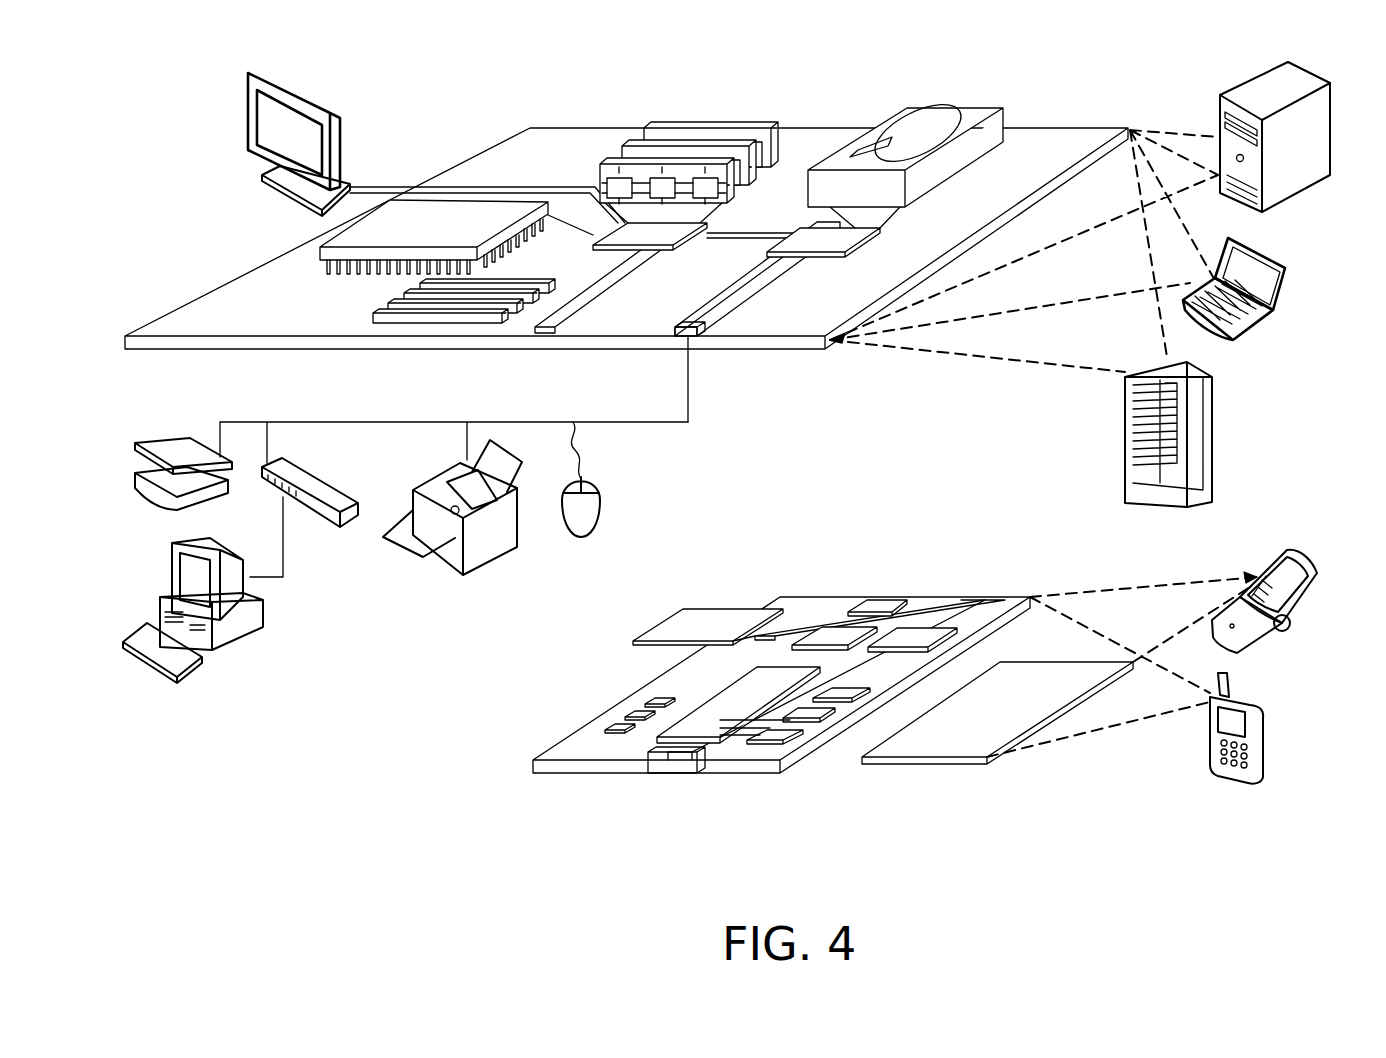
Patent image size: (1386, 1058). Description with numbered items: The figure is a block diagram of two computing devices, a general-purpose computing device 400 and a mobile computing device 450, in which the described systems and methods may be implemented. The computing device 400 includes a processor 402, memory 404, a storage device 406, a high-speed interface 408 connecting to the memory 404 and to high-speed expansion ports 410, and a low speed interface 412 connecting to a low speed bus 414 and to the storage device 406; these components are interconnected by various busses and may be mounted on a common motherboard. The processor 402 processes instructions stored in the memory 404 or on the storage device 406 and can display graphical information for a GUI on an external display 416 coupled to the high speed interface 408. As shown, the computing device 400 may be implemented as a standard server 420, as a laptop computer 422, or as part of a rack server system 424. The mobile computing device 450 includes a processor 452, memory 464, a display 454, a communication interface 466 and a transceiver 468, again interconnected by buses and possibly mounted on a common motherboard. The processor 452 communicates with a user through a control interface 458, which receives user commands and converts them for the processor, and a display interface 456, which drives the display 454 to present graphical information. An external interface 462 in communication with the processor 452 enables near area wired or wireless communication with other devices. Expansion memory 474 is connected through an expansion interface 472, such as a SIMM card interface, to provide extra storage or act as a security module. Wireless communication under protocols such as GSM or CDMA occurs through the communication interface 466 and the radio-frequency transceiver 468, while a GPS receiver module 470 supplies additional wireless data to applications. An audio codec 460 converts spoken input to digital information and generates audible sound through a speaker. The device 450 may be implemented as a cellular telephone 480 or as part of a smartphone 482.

The computing device 400 is at (452, 104).
The processor 402 is at (322, 251).
The memory 404 is at (652, 123).
The storage device 406 is at (897, 112).
The high-speed interface 408 is at (622, 233).
The high-speed expansion ports 410 is at (397, 307).
The low speed interface 412 is at (806, 237).
The low speed bus 414 is at (697, 337).
The display 416 is at (257, 74).
The standard server 420 is at (1220, 113).
The laptop computer 422 is at (1287, 270).
The rack server system 424 is at (1125, 467).
The computing device 450 is at (512, 773).
The processor 452 is at (713, 728).
The display 454 is at (953, 747).
The display interface 456 is at (778, 745).
The control interface 458 is at (838, 725).
The audio codec 460 is at (842, 692).
The external interface 462 is at (677, 760).
The memory 464 is at (625, 727).
The communication interface 466 is at (835, 635).
The transceiver 468 is at (912, 638).
The GPS receiver module 470 is at (890, 597).
The expansion interface 472 is at (770, 612).
The expansion memory 474 is at (683, 611).
The cellular telephone 480 is at (1274, 560).
The smartphone 482 is at (1212, 732).